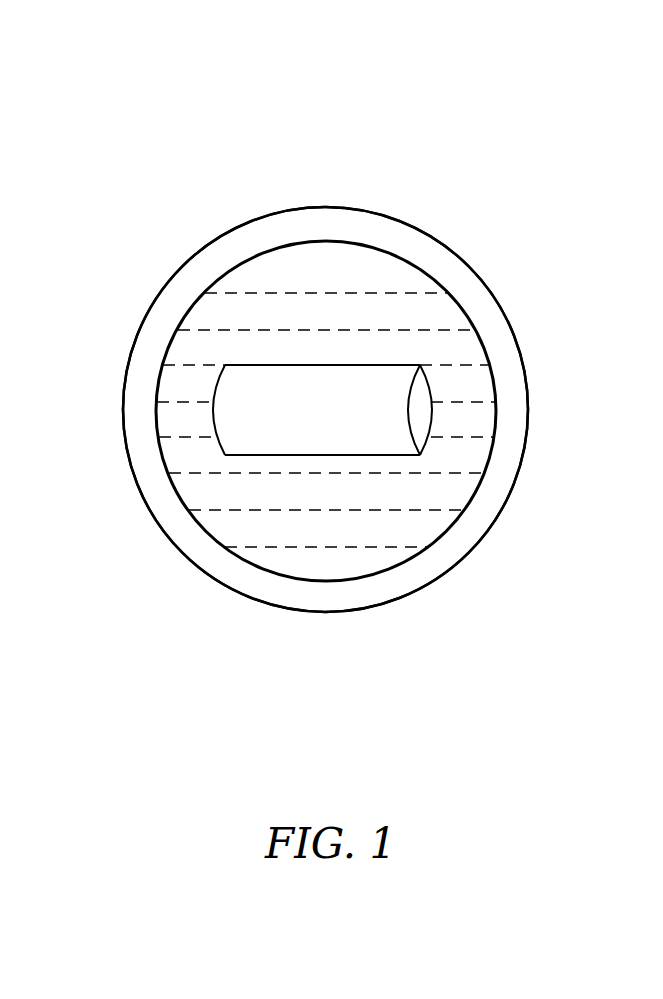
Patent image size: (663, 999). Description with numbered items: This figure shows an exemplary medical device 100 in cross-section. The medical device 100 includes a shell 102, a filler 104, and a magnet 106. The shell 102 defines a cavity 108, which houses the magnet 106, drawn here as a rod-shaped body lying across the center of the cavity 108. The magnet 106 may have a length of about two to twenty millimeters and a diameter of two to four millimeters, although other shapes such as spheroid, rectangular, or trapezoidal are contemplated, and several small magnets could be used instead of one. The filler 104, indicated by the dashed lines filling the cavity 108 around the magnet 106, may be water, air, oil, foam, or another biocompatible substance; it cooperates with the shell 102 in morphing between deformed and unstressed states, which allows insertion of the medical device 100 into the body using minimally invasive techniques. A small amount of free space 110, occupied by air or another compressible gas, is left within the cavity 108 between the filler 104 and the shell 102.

The medical device 100 is at (143, 176).
The shell 102 is at (421, 232).
The filler 104 is at (358, 542).
The magnet 106 is at (248, 364).
The cavity 108 is at (395, 276).
The free space 110 is at (305, 291).